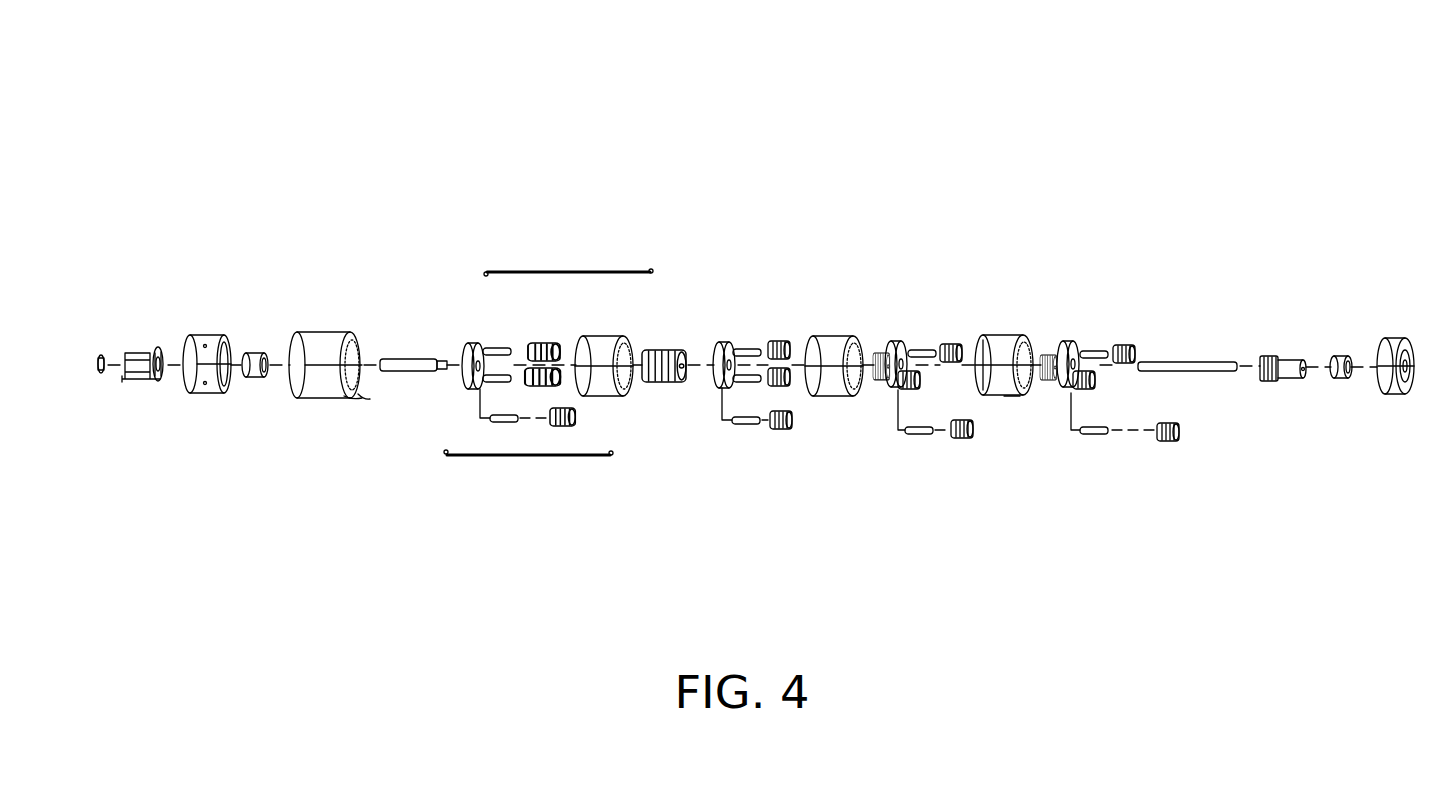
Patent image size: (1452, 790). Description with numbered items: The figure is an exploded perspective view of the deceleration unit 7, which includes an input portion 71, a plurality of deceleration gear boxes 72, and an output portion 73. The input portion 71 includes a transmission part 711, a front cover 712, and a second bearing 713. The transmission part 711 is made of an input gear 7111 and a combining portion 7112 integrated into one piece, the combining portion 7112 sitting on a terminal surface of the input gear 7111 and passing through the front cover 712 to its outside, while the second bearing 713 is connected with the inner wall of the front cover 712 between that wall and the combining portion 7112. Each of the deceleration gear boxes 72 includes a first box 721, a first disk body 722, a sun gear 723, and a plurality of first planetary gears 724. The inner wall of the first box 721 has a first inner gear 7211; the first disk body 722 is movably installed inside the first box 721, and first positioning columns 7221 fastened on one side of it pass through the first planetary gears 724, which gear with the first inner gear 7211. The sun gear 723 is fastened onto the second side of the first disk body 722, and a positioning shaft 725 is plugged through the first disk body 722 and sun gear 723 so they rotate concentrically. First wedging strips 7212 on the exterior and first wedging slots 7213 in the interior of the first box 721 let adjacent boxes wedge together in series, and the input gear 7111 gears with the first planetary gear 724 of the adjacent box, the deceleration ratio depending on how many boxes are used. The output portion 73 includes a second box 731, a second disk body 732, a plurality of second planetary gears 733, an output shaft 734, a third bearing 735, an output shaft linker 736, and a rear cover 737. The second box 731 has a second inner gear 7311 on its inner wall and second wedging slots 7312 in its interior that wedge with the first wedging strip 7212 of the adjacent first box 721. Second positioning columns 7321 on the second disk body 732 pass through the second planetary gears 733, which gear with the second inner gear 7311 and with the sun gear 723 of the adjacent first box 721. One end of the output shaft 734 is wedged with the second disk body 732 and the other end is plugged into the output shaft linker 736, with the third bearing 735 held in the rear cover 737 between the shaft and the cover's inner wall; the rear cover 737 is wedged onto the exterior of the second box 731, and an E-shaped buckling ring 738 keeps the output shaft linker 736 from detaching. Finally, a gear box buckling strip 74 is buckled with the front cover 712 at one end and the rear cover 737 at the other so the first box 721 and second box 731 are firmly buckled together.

The deceleration unit 7 is at (952, 134).
The input portion 71 is at (1400, 192).
The transmission part 711 is at (1300, 253).
The input gear 7111 is at (1266, 357).
The combining portion 7112 is at (1293, 360).
The front cover 712 is at (1394, 338).
The second bearing 713 is at (1341, 356).
The deceleration gear boxes 72 is at (790, 326).
The first box 721 is at (1015, 335).
The first inner gear 7211 is at (1012, 397).
The first wedging strips 7212 is at (984, 340).
The first wedging slots 7213 is at (1046, 383).
The first disk body 722 is at (1064, 342).
The first positioning columns 7221 is at (1113, 434).
The sun gear 723 is at (1078, 396).
The first planetary gears 724 is at (1123, 343).
The positioning shaft 725 is at (1205, 372).
The output portion 73 is at (105, 213).
The second box 731 is at (312, 334).
The second inner gear 7311 is at (362, 400).
The second wedging slots 7312 is at (370, 400).
The second disk body 732 is at (470, 344).
The second positioning columns 7321 is at (515, 421).
The second planetary gears 733 is at (540, 344).
The output shaft 734 is at (410, 359).
The third bearing 735 is at (255, 352).
The output shaft linker 736 is at (153, 350).
The rear cover 737 is at (205, 336).
The E-shaped buckling ring 738 is at (101, 352).
The gear box buckling strip 74 is at (604, 268).